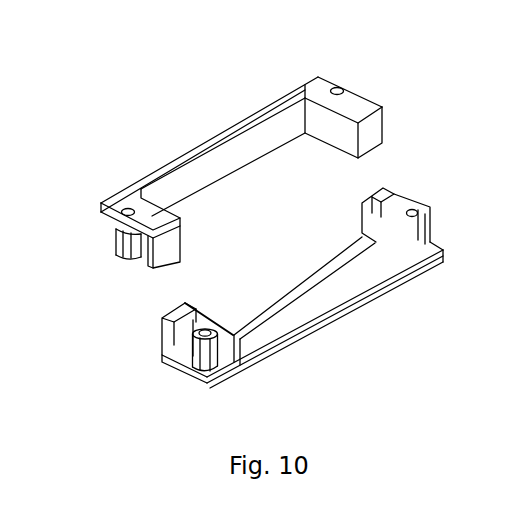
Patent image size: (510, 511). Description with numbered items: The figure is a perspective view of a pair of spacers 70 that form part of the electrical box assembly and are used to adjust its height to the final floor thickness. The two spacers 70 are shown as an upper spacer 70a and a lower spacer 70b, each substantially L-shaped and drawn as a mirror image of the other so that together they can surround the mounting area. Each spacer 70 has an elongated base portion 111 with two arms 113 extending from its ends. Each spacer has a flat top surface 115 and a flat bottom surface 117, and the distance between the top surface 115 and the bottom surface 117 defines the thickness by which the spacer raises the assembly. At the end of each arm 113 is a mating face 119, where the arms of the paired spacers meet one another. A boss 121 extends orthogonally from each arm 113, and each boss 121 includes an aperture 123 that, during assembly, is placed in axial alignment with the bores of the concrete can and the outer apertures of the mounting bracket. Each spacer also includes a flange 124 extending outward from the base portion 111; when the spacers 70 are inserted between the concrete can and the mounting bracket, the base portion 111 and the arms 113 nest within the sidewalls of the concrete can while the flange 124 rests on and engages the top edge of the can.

The spacer 70 is at (171, 108).
The first frame half 70a is at (157, 277).
The second frame half 70b is at (215, 388).
The base portion 111 is at (221, 178).
The arm 113 is at (117, 241).
The top surface 115 is at (265, 107).
The bottom surface 117 is at (288, 299).
The mating face 119 is at (373, 133).
The boss 121 is at (418, 206).
The aperture 123 is at (337, 87).
The flange 124 is at (284, 350).